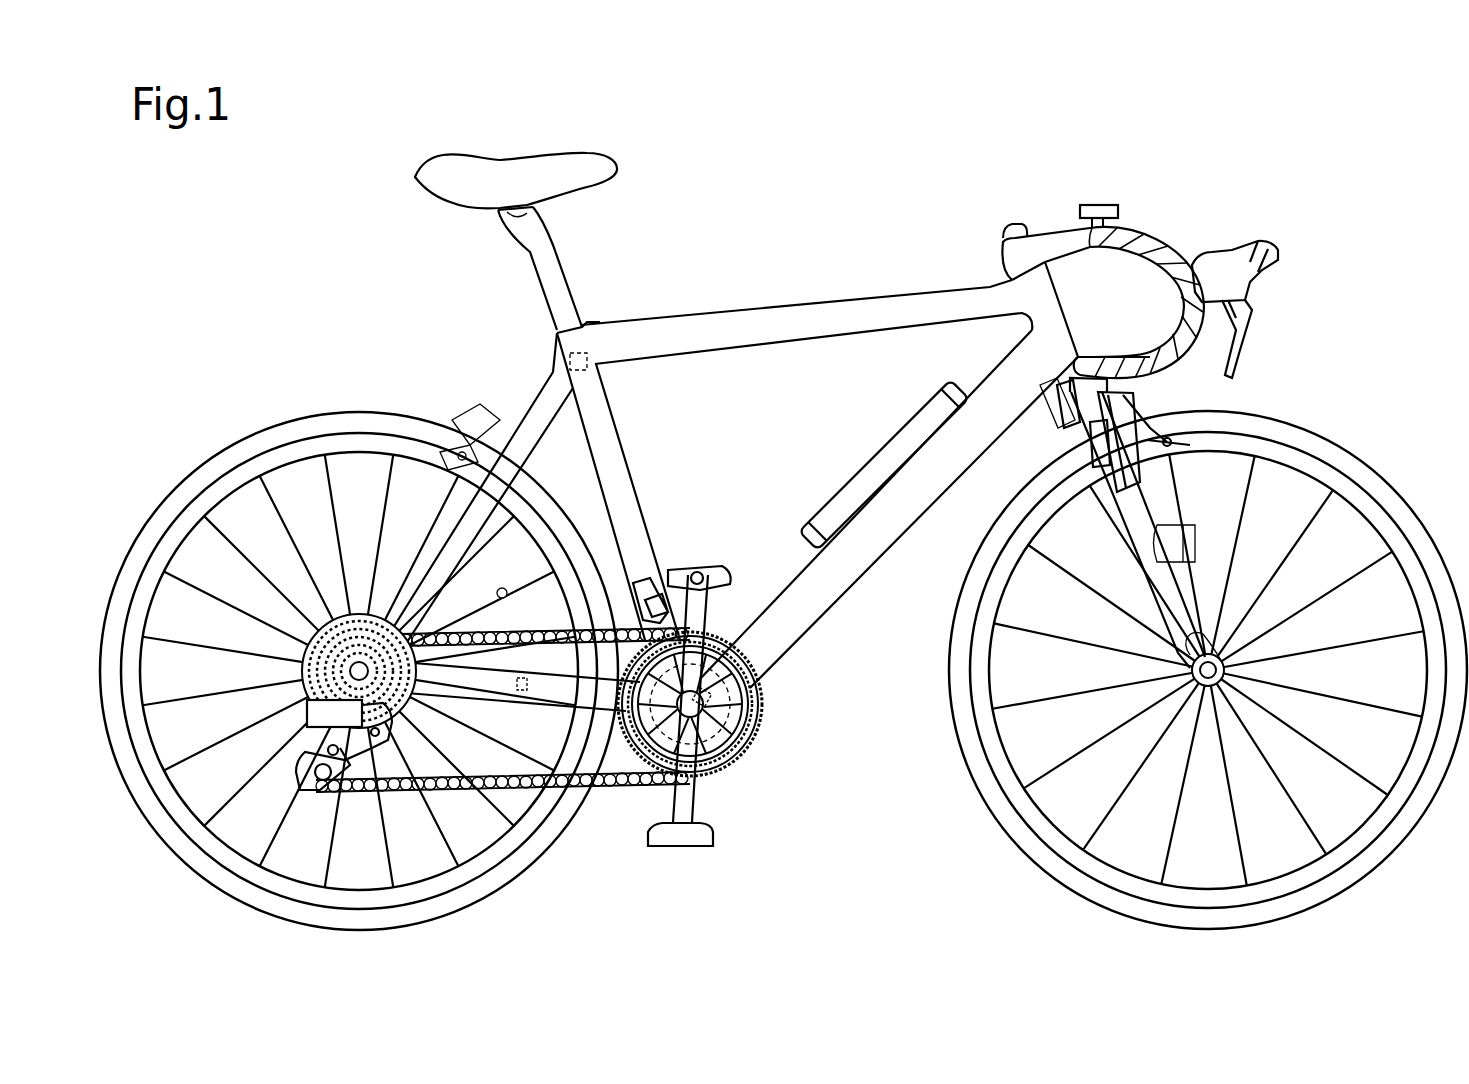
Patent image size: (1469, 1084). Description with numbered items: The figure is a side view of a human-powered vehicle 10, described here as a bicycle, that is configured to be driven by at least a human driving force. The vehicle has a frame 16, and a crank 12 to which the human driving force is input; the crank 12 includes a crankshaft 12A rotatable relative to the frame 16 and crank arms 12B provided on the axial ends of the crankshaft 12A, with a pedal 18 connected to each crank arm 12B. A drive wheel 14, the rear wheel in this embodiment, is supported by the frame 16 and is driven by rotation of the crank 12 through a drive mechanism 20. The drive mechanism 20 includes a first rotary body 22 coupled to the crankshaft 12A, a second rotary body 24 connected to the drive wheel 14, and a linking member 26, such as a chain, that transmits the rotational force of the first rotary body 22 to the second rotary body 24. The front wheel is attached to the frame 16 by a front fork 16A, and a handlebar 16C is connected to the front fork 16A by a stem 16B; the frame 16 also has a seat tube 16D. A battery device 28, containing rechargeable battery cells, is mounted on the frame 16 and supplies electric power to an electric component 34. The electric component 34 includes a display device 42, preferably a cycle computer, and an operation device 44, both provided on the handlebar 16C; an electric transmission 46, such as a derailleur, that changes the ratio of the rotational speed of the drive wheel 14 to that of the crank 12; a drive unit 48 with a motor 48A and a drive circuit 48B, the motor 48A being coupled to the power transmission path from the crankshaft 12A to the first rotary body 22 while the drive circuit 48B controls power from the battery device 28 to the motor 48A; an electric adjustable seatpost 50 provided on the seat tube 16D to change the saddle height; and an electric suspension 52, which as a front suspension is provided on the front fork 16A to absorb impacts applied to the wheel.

The human-powered vehicle 10 is at (1024, 116).
The crank 12 is at (774, 838).
The crankshaft 12A is at (765, 687).
The crank arms 12B is at (700, 612).
The drive wheel 14 is at (264, 418).
The frame 16 is at (822, 308).
The front fork 16A is at (1137, 517).
The stem 16B is at (1029, 248).
The handlebar 16C is at (1154, 235).
The seat tube 16D is at (602, 420).
The pedal 18 is at (697, 570).
The drive mechanism 20 is at (584, 891).
The first rotary body 22 is at (623, 745).
The second rotary body 24 is at (310, 631).
The linking member 26 is at (400, 790).
The battery device 28 is at (872, 460).
The electric component 34 is at (787, 466).
The display device 42 is at (1097, 205).
The operation device 44 is at (1269, 264).
The electric transmission 46 is at (300, 720).
The drive unit 48 is at (767, 717).
The motor 48A is at (760, 740).
The drive circuit 48B is at (745, 637).
The electric adjustable seatpost 50 is at (588, 345).
The electric suspension 52 is at (1102, 443).